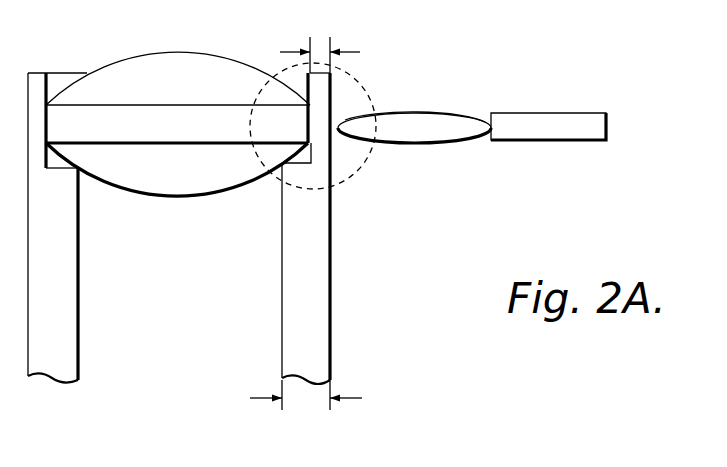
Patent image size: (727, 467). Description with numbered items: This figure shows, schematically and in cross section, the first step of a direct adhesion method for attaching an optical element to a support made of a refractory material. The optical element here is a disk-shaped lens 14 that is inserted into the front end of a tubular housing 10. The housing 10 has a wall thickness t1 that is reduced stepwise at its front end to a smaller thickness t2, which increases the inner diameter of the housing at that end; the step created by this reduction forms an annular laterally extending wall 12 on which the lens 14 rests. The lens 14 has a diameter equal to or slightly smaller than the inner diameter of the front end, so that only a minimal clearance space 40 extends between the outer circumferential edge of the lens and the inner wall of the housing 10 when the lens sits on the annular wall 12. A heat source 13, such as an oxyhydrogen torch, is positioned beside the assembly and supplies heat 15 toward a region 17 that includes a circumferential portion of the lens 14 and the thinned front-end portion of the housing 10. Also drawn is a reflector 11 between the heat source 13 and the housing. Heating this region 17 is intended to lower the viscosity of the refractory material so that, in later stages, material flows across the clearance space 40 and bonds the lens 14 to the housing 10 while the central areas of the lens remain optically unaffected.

The tubular housing 10 is at (327, 236).
The reflector 11 is at (422, 127).
The annular laterally extending wall 12 is at (300, 165).
The heat source 13 is at (540, 113).
The lens 14 is at (193, 62).
The heat 15 is at (416, 113).
The region 17 is at (370, 78).
The clearance space 40 is at (58, 90).
The thickness t1 is at (313, 404).
The thickness t2 is at (320, 47).